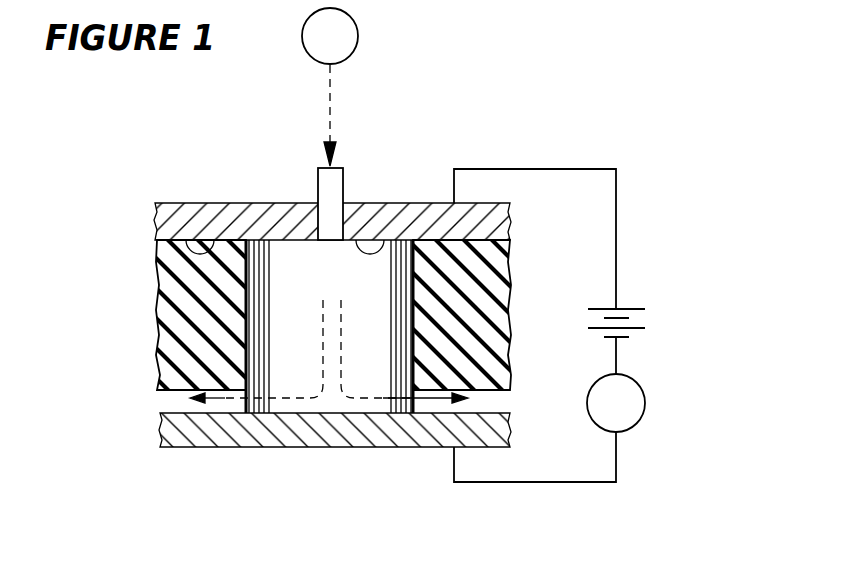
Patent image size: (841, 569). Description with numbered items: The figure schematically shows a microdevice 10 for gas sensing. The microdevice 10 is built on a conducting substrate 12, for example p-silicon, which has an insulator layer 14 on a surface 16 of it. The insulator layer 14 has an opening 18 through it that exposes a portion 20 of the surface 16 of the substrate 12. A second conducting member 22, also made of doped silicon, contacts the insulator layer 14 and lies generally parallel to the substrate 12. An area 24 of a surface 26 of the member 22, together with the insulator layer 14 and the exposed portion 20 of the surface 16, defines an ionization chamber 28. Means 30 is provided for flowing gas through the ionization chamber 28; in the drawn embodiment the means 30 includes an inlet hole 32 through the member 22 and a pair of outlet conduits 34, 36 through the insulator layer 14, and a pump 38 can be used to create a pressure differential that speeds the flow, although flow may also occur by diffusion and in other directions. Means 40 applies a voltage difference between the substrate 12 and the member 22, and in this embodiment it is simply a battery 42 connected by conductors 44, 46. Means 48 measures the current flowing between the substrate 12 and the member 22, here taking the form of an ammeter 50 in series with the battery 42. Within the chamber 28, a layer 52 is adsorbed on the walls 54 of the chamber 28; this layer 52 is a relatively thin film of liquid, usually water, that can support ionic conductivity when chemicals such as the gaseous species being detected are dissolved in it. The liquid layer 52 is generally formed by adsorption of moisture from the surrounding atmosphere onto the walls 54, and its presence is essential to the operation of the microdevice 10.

The microdevice 10 is at (497, 140).
The conducting substrate 12 is at (172, 425).
The insulator layer 14 is at (165, 303).
The surface 16 is at (178, 413).
The opening 18 is at (257, 272).
The portion of the surface 20 is at (273, 412).
The conducting member 22 is at (187, 212).
The area 24 is at (389, 243).
The surface 26 is at (248, 270).
The ionization chamber 28 is at (296, 276).
The means for flowing gas 30 is at (348, 150).
The inlet hole 32 is at (323, 168).
The outlet conduit 34 is at (233, 392).
The outlet conduit 36 is at (500, 396).
The pump 38 is at (357, 28).
The means for applying a voltage difference 40 is at (587, 324).
The battery 42 is at (660, 313).
The conductor 44 is at (562, 169).
The conductor 46 is at (562, 482).
The means for measuring the current 48 is at (652, 372).
The ammeter 50 is at (645, 405).
The layer 52 is at (405, 268).
The walls 54 is at (247, 331).